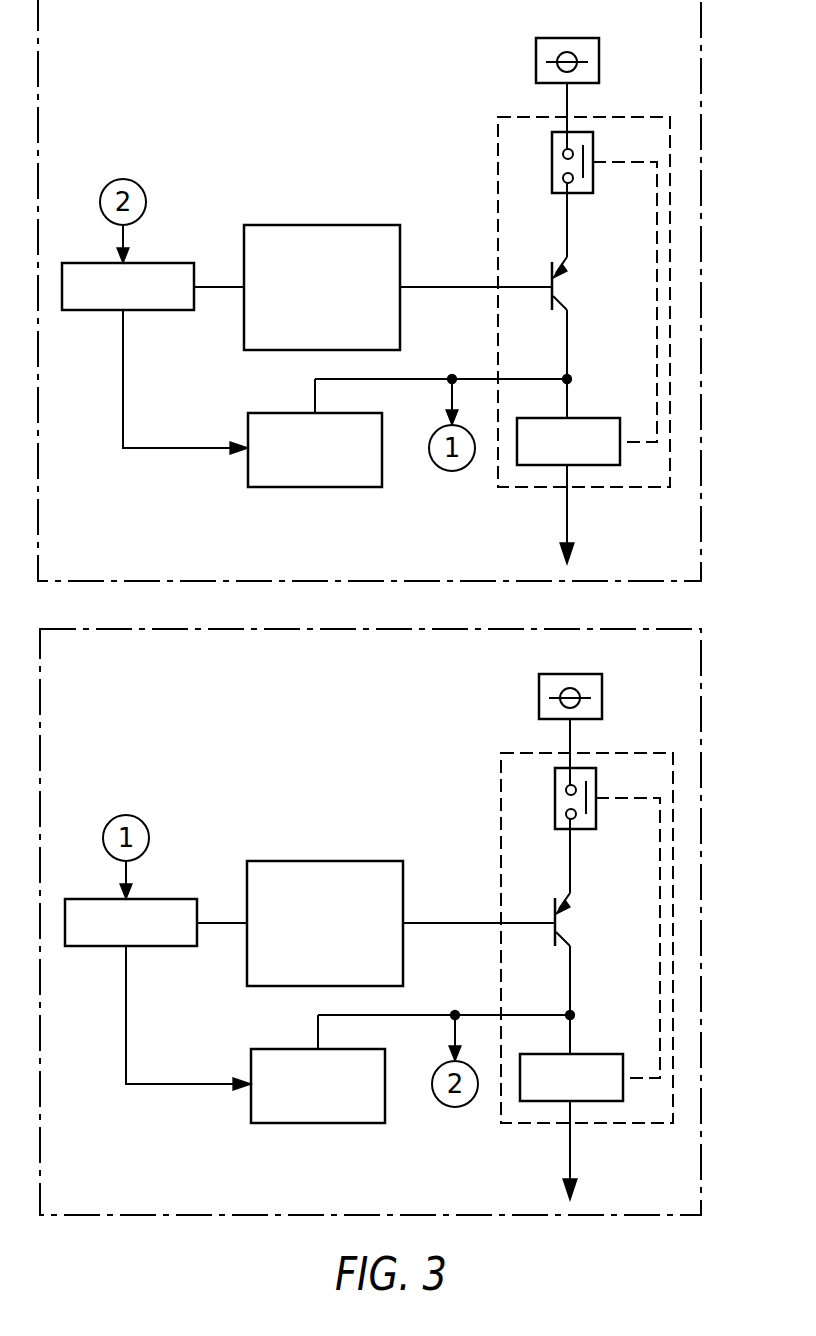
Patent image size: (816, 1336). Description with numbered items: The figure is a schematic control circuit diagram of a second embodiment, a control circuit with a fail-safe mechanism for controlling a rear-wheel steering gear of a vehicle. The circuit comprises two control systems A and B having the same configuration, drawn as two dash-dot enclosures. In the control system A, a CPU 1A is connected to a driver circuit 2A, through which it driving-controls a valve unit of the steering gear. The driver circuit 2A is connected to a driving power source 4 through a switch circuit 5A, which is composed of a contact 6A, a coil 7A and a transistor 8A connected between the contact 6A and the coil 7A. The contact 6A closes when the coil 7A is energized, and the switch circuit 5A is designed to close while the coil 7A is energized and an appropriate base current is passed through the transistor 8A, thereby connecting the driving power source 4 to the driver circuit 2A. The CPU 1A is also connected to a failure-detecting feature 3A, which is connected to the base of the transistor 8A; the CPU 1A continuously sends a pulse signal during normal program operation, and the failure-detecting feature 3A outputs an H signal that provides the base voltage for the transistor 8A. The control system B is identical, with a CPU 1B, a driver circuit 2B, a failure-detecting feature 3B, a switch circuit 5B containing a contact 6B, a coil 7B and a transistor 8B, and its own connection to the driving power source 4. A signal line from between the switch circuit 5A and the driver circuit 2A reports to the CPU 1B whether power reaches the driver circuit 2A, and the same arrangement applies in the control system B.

The control system A is at (716, 222).
The control system B is at (399, 922).
The CPU 1A is at (168, 263).
The CPU 1B is at (145, 904).
The driver circuit 2A is at (348, 487).
The driver circuit 2B is at (325, 1103).
The failure-detecting feature 3A is at (358, 225).
The failure-detecting feature 3B is at (325, 901).
The driving power source 4 is at (536, 47).
The switch circuit 5A is at (498, 140).
The switch circuit 5B is at (568, 921).
The contact 6A is at (593, 143).
The contact 6B is at (611, 769).
The coil 7A is at (610, 466).
The coil 7B is at (590, 1111).
The transistor 8A is at (552, 270).
The transistor 8B is at (486, 936).